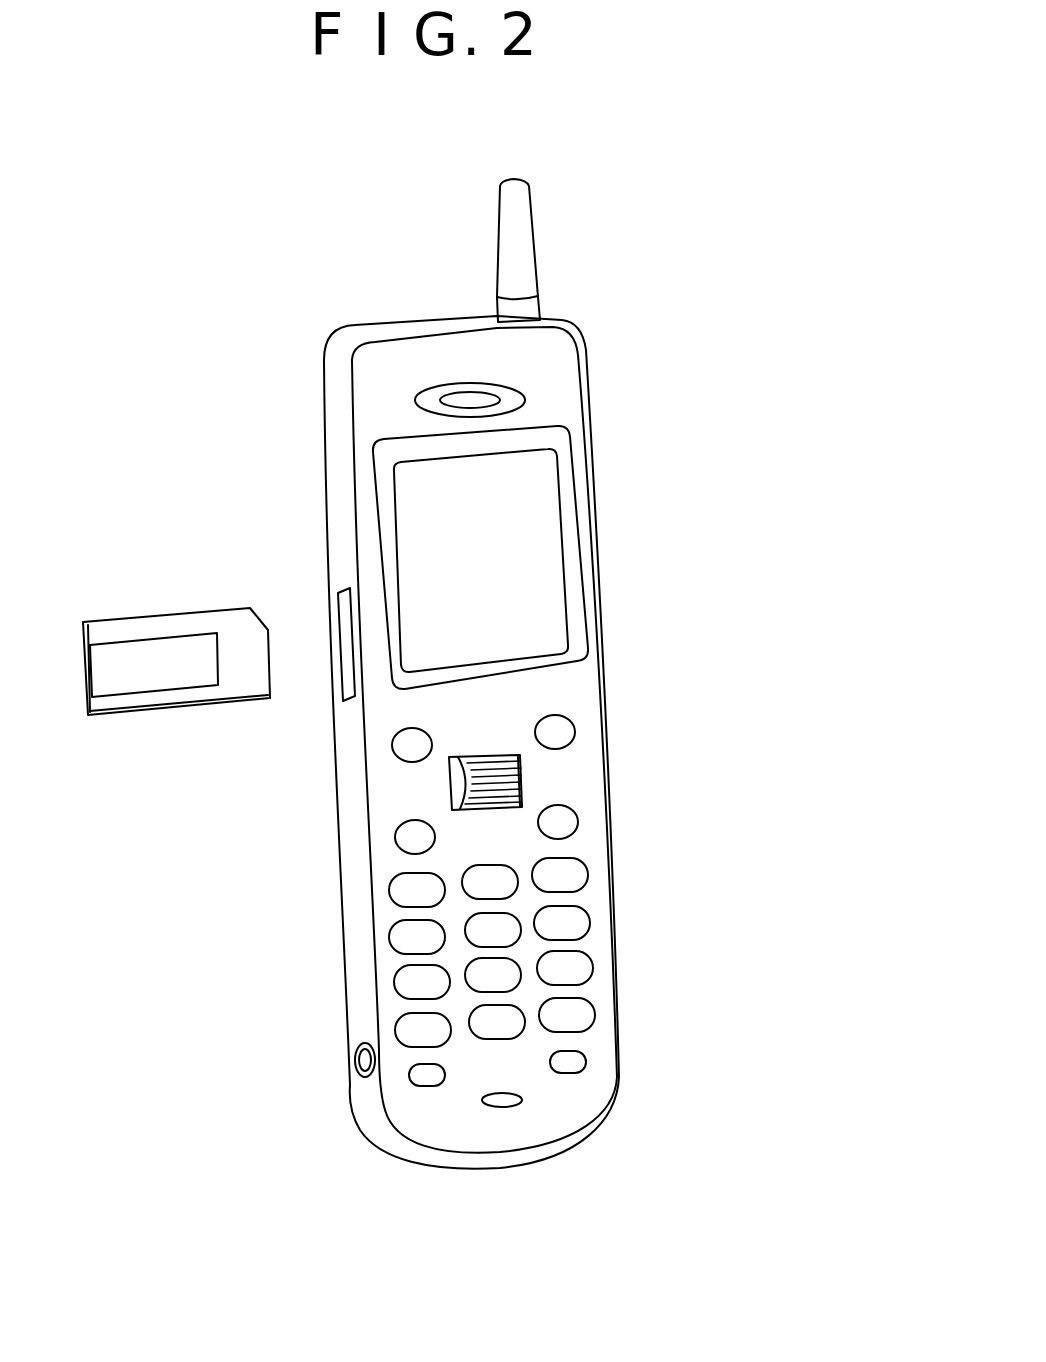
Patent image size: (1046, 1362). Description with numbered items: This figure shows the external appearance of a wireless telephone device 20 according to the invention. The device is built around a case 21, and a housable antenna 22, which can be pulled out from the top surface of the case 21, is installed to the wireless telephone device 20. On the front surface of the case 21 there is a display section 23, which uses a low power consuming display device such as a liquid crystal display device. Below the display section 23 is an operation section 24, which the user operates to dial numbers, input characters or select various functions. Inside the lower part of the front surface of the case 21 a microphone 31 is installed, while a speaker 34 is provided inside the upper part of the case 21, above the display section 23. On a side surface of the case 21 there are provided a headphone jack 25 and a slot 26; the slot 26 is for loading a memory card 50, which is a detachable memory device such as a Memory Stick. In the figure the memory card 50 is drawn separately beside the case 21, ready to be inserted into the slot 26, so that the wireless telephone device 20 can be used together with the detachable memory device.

The wireless telephone device 20 is at (777, 432).
The case 21 is at (338, 907).
The housable antenna 22 is at (519, 219).
The display section 23 is at (543, 533).
The operation section 24 is at (613, 703).
The headphone jack 25 is at (357, 1063).
The slot 26 is at (338, 586).
The microphone 31 is at (507, 1108).
The speaker 34 is at (507, 388).
The memory card 50 is at (107, 718).